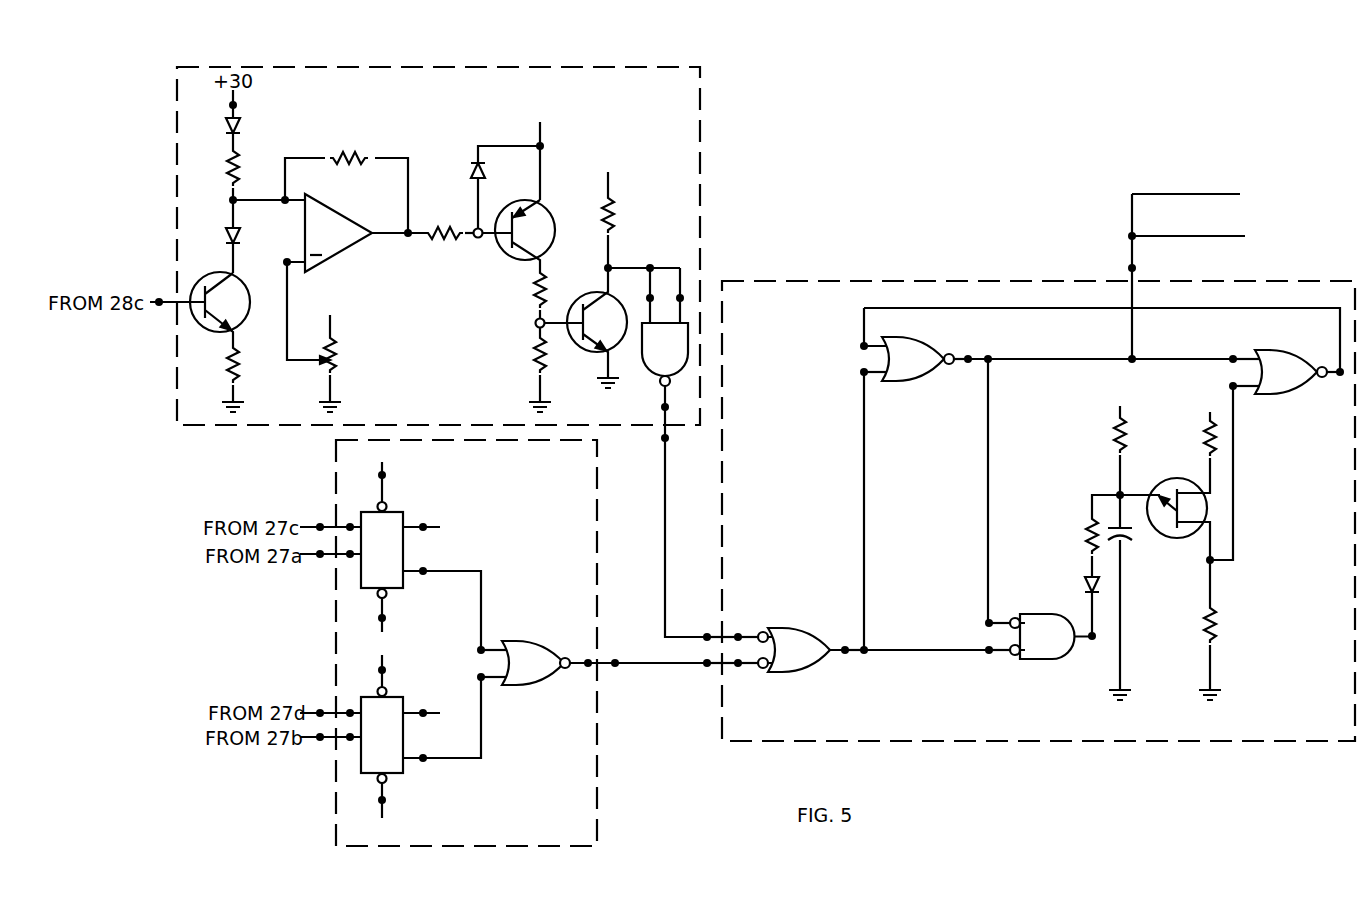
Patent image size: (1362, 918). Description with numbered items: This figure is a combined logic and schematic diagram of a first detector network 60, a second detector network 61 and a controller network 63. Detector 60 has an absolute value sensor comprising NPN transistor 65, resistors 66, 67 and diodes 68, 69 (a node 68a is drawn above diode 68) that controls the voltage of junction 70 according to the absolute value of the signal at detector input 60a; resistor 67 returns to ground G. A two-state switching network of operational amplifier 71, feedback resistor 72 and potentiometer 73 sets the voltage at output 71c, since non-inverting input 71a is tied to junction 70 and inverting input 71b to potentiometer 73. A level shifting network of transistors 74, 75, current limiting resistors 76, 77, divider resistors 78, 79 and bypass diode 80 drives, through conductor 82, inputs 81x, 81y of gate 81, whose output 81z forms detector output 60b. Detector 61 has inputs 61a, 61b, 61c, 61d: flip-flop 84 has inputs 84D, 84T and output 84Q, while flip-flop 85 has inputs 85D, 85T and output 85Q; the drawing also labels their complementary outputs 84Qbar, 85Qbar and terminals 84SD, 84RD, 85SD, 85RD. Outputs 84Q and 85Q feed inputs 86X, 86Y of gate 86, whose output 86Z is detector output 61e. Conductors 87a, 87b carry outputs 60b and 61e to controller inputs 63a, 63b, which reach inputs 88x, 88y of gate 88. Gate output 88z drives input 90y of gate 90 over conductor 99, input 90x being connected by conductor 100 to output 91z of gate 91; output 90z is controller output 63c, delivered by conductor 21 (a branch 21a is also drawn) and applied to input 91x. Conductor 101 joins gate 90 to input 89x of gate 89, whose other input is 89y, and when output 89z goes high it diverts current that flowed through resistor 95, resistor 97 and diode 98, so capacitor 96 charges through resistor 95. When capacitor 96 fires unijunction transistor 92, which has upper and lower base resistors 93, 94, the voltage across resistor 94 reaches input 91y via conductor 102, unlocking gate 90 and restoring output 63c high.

The first detector network 60 is at (175, 133).
The detector input 60a is at (159, 298).
The detector output 60b is at (661, 440).
The second detector network 61 is at (597, 496).
The detector input 61a is at (318, 524).
The detector input 61b is at (318, 558).
The detector input 61c is at (318, 710).
The detector input 61d is at (318, 741).
The detector output 61e is at (615, 668).
The controller network 63 is at (1232, 744).
The controller input 63a is at (707, 633).
The controller input 63b is at (707, 668).
The controller output 63c is at (1128, 267).
The NPN transistor 65 is at (203, 283).
The resistor 66 is at (243, 165).
The resistor 67 is at (229, 365).
The diode 68 is at (243, 132).
The node 68a is at (243, 106).
The diode 69 is at (227, 237).
The junction 70 is at (229, 199).
The operational amplifier 71 is at (338, 233).
The non-inverting input 71a is at (289, 197).
The inverting input 71b is at (290, 266).
The amplifier output 71c is at (406, 240).
The feedback resistor 72 is at (352, 154).
The voltage level adjusting potentiometer 73 is at (338, 358).
The transistor 74 is at (546, 212).
The transistor 75 is at (593, 298).
The current limiting resistor 76 is at (446, 228).
The current limiting resistor 77 is at (613, 212).
The resistor 78 is at (535, 290).
The resistor 79 is at (535, 324).
The base-emitter bypass diode 80 is at (474, 158).
The gate 81 is at (665, 354).
The gate input 81x is at (682, 296).
The gate input 81y is at (647, 297).
The gate output 81z is at (661, 407).
The conductor 82 is at (630, 265).
The flip-flop 84 is at (382, 550).
The flip-flop input 84D is at (348, 524).
The flip-flop input 84T is at (348, 558).
The flip-flop output 84Q is at (425, 522).
The Q-bar output 84Qbar is at (478, 535).
The set input 84SD is at (386, 476).
The reset input 84RD is at (386, 617).
The flip-flop 85 is at (382, 735).
The flip-flop input 85D is at (348, 710).
The flip-flop input 85T is at (348, 741).
The flip-flop output 85Q is at (425, 717).
The Q-bar output 85Qbar is at (481, 767).
The set input 85SD is at (386, 670).
The reset input 85RD is at (386, 803).
The gate 86 is at (536, 663).
The gate input 86X is at (478, 648).
The gate input 86Y is at (483, 681).
The gate output 86Z is at (587, 658).
The conductor 87a is at (662, 568).
The conductor 87b is at (645, 660).
The gate 88 is at (806, 650).
The gate input 88x is at (740, 632).
The NOR gate input 88y is at (740, 668).
The gate output 88z is at (847, 654).
The gate 89 is at (1056, 636).
The gate input 89x is at (986, 620).
The gate input 89y is at (988, 654).
The gate output 89z is at (1094, 641).
The gate 90 is at (925, 359).
The gate input 90x is at (860, 345).
The gate input 90y is at (860, 374).
The gate output 90z is at (968, 355).
The gate 91 is at (1297, 372).
The gate input 91x is at (1231, 356).
The gate input 91y is at (1230, 385).
The gate output 91z is at (1339, 378).
The unijunction transistor 92 is at (1162, 486).
The upper base resistor 93 is at (1205, 440).
The lower base resistor 94 is at (1215, 620).
The resistor 95 is at (1115, 440).
The capacitor 96 is at (1130, 542).
The resistor 97 is at (1087, 528).
The diode 98 is at (1087, 578).
The conductor 99 is at (862, 472).
The conductor 100 is at (1320, 312).
The conductor 101 is at (985, 420).
The conductor 102 is at (1236, 470).
The conductor 21 is at (1172, 236).
The conductor 21a is at (1205, 195).
The ground G is at (229, 401).